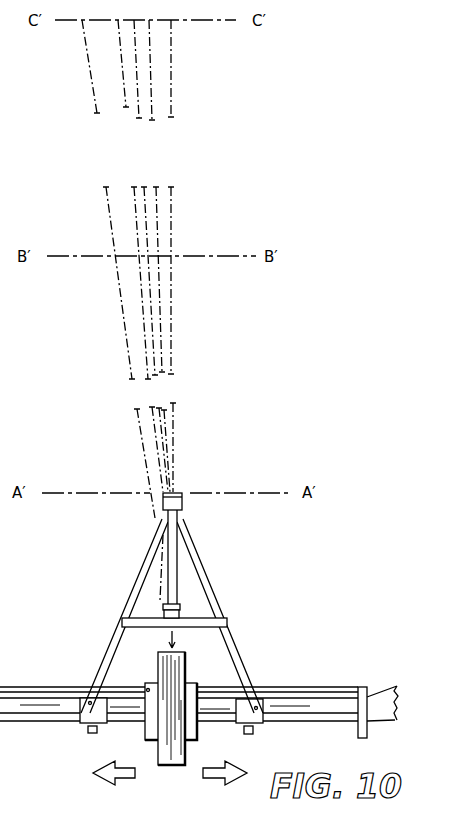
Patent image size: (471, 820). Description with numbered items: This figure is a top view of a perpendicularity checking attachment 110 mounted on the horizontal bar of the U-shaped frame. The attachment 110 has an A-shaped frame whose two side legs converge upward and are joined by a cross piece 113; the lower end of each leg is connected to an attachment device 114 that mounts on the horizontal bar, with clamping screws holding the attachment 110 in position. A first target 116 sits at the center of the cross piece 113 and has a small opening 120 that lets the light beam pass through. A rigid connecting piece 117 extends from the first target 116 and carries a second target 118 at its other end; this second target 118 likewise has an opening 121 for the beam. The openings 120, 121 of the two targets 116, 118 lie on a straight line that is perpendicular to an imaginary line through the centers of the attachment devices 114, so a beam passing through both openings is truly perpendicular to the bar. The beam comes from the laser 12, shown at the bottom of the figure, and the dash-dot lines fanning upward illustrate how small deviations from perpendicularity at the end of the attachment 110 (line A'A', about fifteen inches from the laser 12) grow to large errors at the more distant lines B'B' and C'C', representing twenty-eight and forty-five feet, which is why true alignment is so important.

The laser 12 is at (175, 749).
The perpendicularity checking attachment 110 is at (290, 572).
The cross piece 113 is at (147, 629).
The attachment device 114 is at (84, 700).
The first target 116 is at (179, 615).
The rigid connecting piece 117 is at (177, 577).
The second target 118 is at (182, 503).
The small opening 120 is at (180, 607).
The opening 121 is at (176, 493).